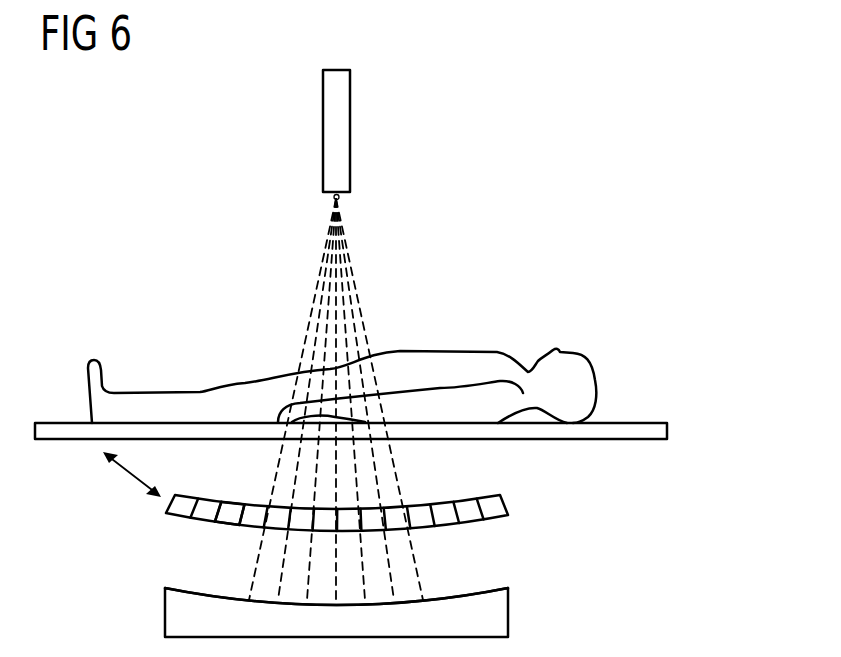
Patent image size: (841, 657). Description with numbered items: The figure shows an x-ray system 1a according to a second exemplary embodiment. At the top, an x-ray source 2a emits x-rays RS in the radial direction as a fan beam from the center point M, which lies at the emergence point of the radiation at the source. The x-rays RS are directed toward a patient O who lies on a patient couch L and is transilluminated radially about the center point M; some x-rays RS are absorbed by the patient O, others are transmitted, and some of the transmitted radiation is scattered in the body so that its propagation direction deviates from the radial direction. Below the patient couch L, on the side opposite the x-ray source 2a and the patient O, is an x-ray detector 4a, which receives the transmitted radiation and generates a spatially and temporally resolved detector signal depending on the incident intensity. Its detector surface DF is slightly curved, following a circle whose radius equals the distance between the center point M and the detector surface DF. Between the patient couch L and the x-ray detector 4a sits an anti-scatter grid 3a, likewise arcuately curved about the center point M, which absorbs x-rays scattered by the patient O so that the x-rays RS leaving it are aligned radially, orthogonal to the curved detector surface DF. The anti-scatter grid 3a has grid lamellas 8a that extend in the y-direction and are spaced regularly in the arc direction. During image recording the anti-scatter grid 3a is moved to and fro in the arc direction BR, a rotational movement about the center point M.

The x-ray system 1a is at (558, 122).
The x-ray source 2a is at (350, 129).
The center point M is at (334, 199).
The x-rays RS is at (349, 243).
The patient O is at (482, 352).
The patient couch L is at (667, 431).
The arc direction BR is at (130, 484).
The grid lamellas 8a is at (240, 505).
The anti-scatter grid 3a is at (369, 490).
The detector surface DF is at (196, 585).
The x-ray detector 4a is at (348, 591).